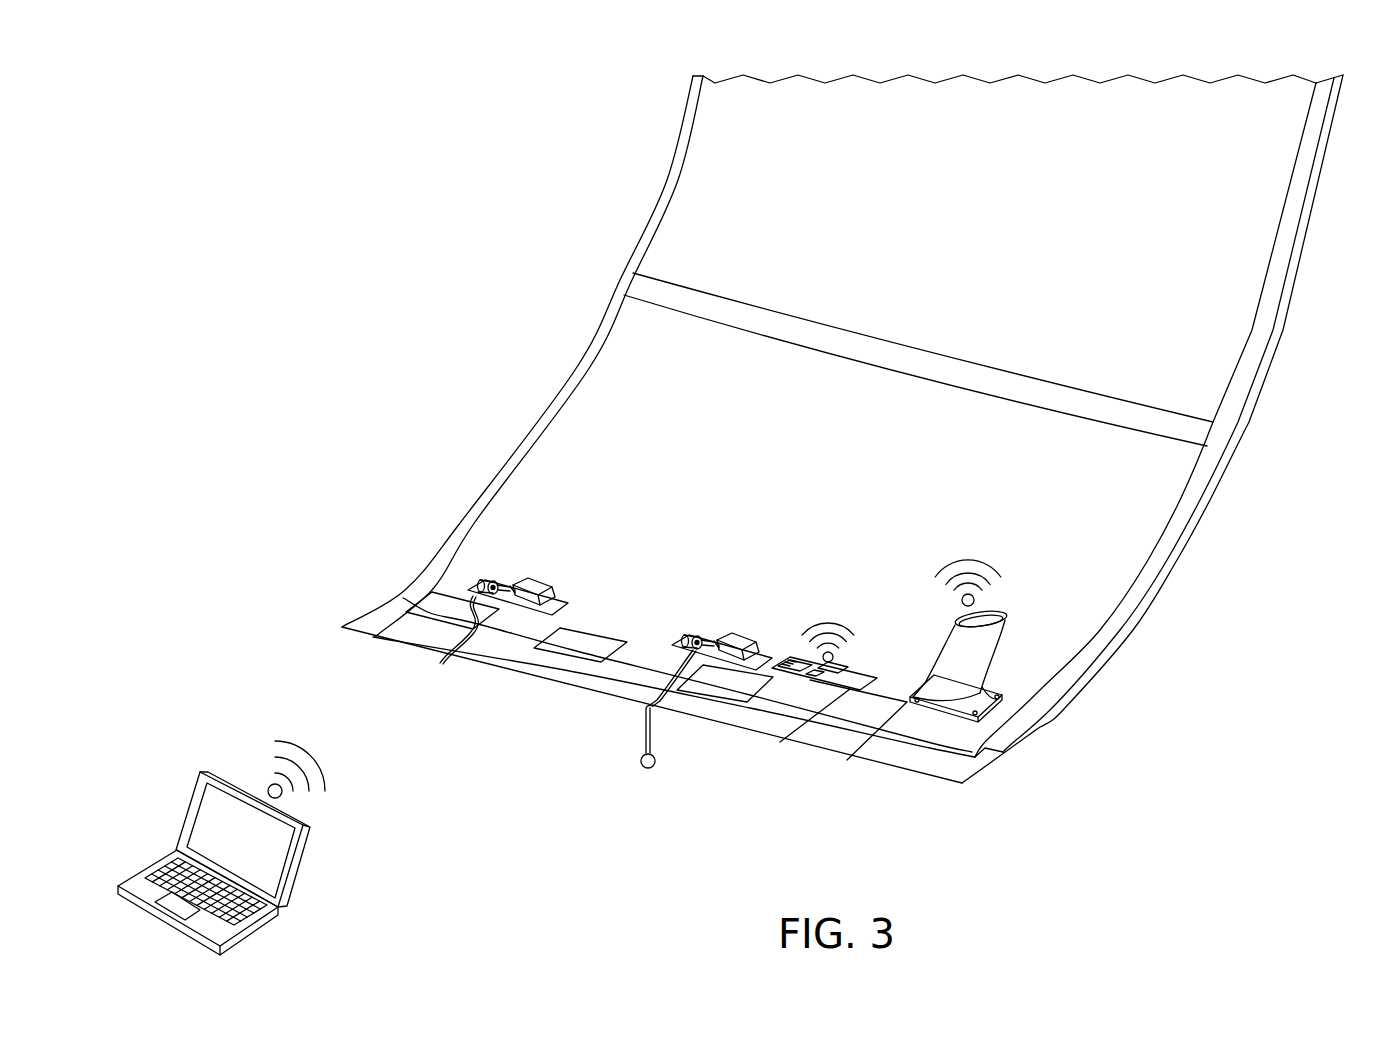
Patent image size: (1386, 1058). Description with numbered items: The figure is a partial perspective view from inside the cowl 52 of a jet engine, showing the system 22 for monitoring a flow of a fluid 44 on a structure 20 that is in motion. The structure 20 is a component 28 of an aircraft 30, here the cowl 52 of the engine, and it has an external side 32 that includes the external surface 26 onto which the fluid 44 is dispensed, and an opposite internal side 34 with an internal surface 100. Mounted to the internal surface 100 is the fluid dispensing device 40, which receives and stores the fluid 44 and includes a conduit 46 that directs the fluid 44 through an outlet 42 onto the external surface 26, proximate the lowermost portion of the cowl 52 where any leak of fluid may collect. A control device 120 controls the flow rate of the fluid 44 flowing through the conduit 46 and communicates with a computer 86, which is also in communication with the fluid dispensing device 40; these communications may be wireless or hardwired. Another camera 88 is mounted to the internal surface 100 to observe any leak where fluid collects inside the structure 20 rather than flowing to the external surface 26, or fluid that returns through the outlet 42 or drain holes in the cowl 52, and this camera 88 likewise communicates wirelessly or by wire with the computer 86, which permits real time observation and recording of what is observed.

The structure 20 is at (457, 527).
The system 22 is at (877, 643).
The external surface 26 is at (1282, 343).
The component 28 is at (634, 243).
The aircraft 30 is at (383, 298).
The external side 32 is at (1240, 470).
The internal side 34 is at (1135, 585).
The fluid dispensing device 40 is at (723, 667).
The outlet 42 is at (858, 760).
The fluid 44 is at (638, 743).
The conduit 46 is at (640, 693).
The cowl 52 is at (965, 97).
The computer 86 is at (302, 870).
The camera 88 is at (977, 655).
The internal surface 100 is at (487, 661).
The control device 120 is at (802, 662).